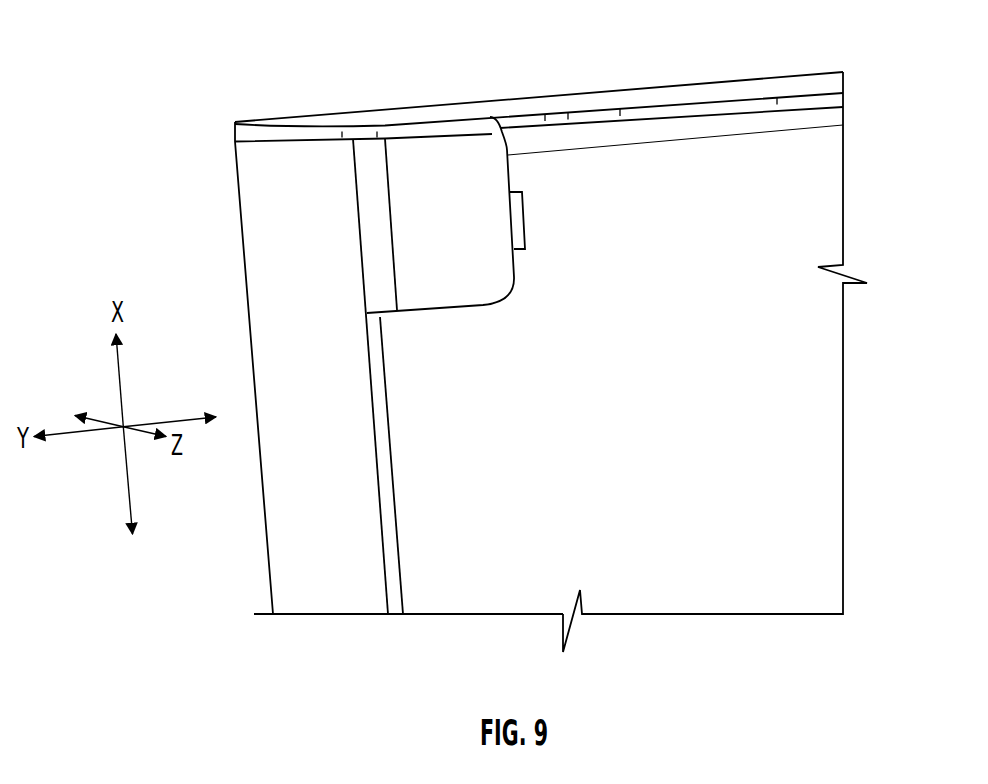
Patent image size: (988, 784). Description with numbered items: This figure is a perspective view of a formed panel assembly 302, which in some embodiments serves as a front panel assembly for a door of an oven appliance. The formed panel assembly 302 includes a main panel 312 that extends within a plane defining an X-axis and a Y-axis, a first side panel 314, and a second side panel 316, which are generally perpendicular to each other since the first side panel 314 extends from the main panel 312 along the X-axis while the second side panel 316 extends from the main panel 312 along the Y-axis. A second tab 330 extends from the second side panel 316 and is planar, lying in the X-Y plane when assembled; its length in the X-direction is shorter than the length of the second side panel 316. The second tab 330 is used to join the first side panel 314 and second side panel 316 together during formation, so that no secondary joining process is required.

The formed panel assembly 302 is at (231, 579).
The main panel 312 is at (783, 338).
The first side panel 314 is at (668, 92).
The second side panel 316 is at (268, 217).
The second tab 330 is at (447, 243).